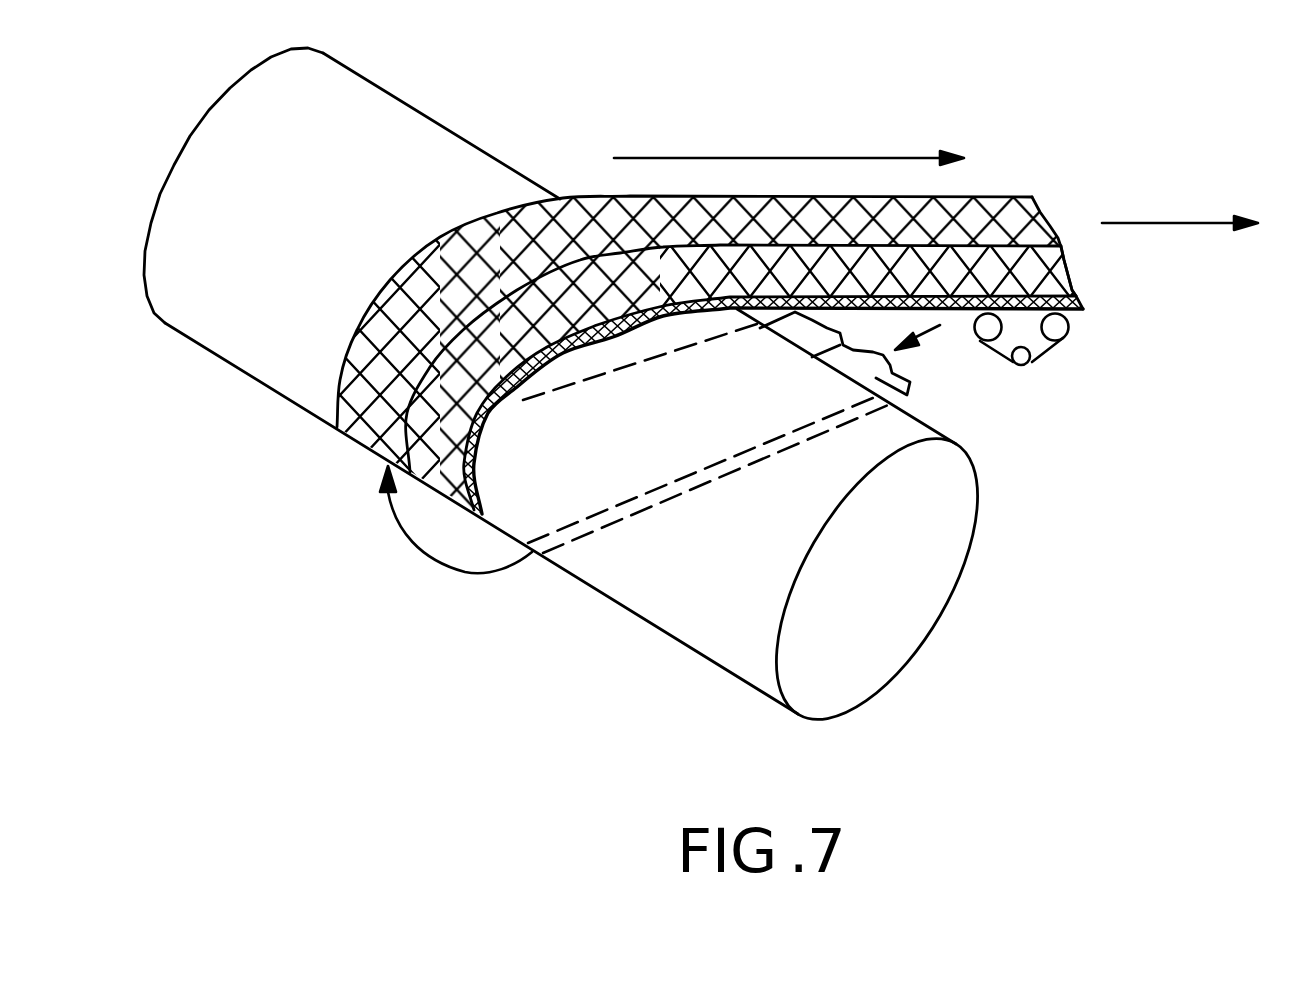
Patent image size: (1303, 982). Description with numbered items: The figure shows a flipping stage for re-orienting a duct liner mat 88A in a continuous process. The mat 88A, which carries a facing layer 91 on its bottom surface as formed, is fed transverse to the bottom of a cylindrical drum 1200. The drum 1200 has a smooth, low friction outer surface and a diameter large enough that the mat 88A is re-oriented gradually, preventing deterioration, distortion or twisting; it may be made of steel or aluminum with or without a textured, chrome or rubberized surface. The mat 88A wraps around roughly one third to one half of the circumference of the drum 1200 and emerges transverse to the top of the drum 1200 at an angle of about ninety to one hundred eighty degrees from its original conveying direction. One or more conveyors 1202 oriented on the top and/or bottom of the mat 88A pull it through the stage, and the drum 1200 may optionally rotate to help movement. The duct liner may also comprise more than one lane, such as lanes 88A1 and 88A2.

The facing layer 91 is at (763, 333).
The lane of duct liner 88A1 is at (1019, 228).
The lane of duct liner 88A2 is at (1062, 263).
The mat 88A is at (892, 377).
The cylindrical drum 1200 is at (720, 610).
The conveyors 1202 is at (1068, 341).